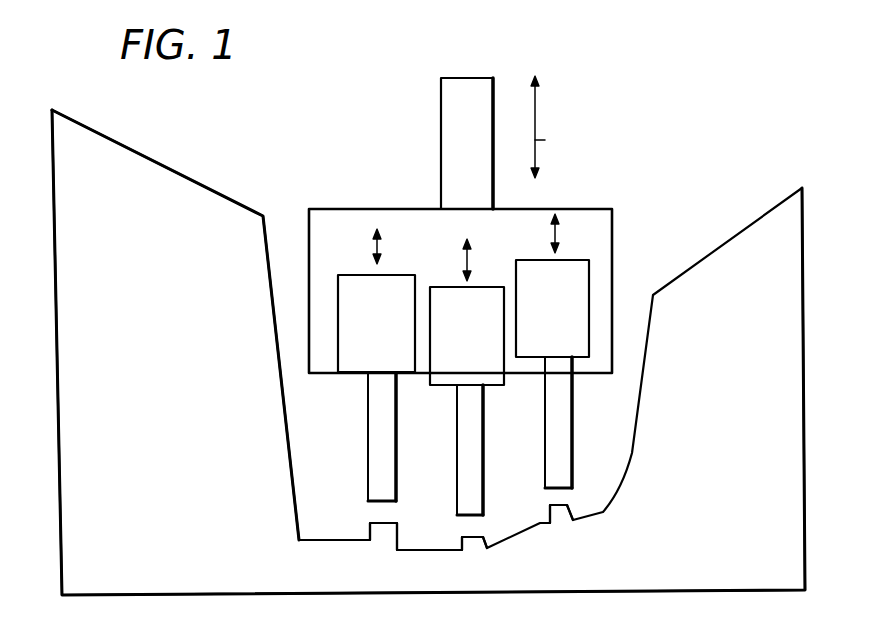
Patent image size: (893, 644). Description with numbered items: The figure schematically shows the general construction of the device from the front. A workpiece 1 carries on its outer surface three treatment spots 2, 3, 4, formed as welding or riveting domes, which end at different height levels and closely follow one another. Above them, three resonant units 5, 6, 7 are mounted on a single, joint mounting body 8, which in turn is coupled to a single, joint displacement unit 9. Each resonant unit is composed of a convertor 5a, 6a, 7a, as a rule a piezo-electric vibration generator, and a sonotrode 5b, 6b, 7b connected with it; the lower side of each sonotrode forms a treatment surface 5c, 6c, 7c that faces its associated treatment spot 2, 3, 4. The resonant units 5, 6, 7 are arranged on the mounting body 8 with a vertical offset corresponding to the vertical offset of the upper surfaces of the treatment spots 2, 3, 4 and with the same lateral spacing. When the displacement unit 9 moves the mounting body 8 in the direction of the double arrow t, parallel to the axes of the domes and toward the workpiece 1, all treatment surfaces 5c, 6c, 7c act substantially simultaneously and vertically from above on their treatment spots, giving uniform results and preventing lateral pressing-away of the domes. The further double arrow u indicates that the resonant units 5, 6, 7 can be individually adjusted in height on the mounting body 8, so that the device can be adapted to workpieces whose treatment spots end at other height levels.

The workpiece 1 is at (88, 247).
The treatment spot 2 is at (374, 520).
The treatment spot 3 is at (493, 538).
The treatment spot 4 is at (570, 512).
The resonant unit 5 is at (385, 363).
The convertor 5a is at (376, 323).
The sonotrode 5b is at (369, 422).
The treatment surface 5c is at (378, 503).
The resonant unit 6 is at (457, 371).
The convertor 6a is at (467, 336).
The sonotrode 6b is at (459, 435).
The treatment surface 6c is at (458, 514).
The resonant unit 7 is at (545, 358).
The convertor 7a is at (552, 308).
The sonotrode 7b is at (553, 425).
The treatment surface 7c is at (554, 486).
The mounting body 8 is at (624, 244).
The displacement unit 9 is at (452, 125).
The double arrow t is at (543, 127).
The double arrow u is at (376, 233).